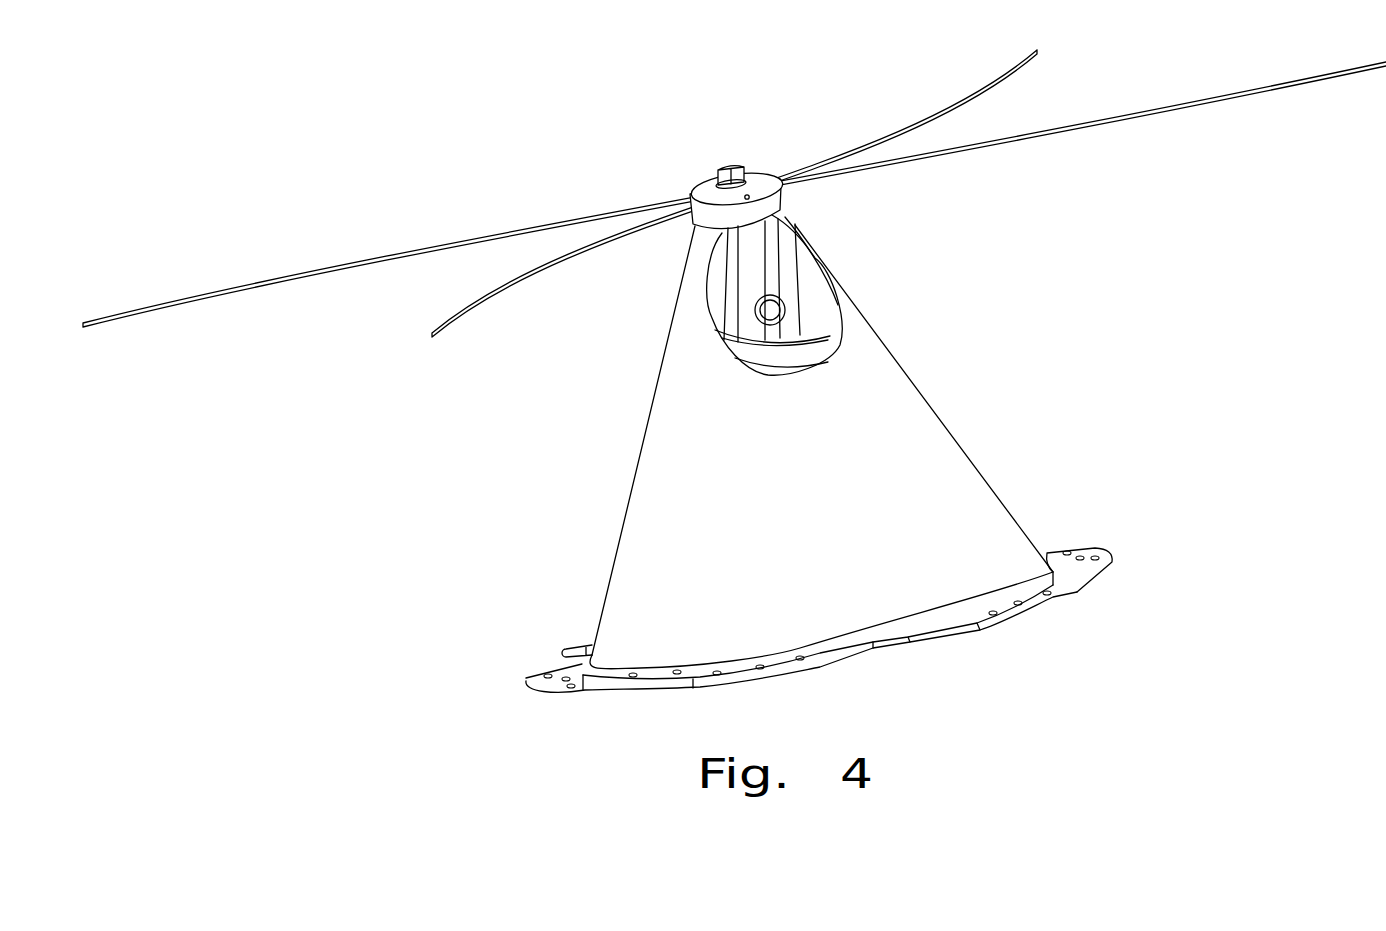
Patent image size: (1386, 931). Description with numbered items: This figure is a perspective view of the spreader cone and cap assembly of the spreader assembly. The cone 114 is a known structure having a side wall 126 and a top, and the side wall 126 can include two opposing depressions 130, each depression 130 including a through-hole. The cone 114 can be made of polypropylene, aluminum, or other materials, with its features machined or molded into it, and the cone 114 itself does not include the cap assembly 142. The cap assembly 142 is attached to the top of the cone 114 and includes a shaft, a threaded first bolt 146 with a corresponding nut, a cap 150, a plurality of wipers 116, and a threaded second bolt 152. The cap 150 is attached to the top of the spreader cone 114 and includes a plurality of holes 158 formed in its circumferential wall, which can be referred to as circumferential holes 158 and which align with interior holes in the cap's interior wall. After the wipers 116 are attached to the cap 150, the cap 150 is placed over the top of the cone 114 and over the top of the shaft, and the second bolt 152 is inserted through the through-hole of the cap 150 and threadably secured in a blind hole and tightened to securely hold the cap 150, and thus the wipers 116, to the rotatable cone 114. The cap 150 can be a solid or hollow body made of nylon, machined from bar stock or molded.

The cone 114 is at (734, 356).
The wipers 116 is at (1166, 106).
The side wall 126 is at (1002, 506).
The depression 130 is at (814, 318).
The cap assembly 142 is at (734, 179).
The threaded first bolt 146 is at (775, 312).
The cap 150 is at (739, 171).
The threaded second bolt 152 is at (726, 168).
The holes 158 is at (752, 198).